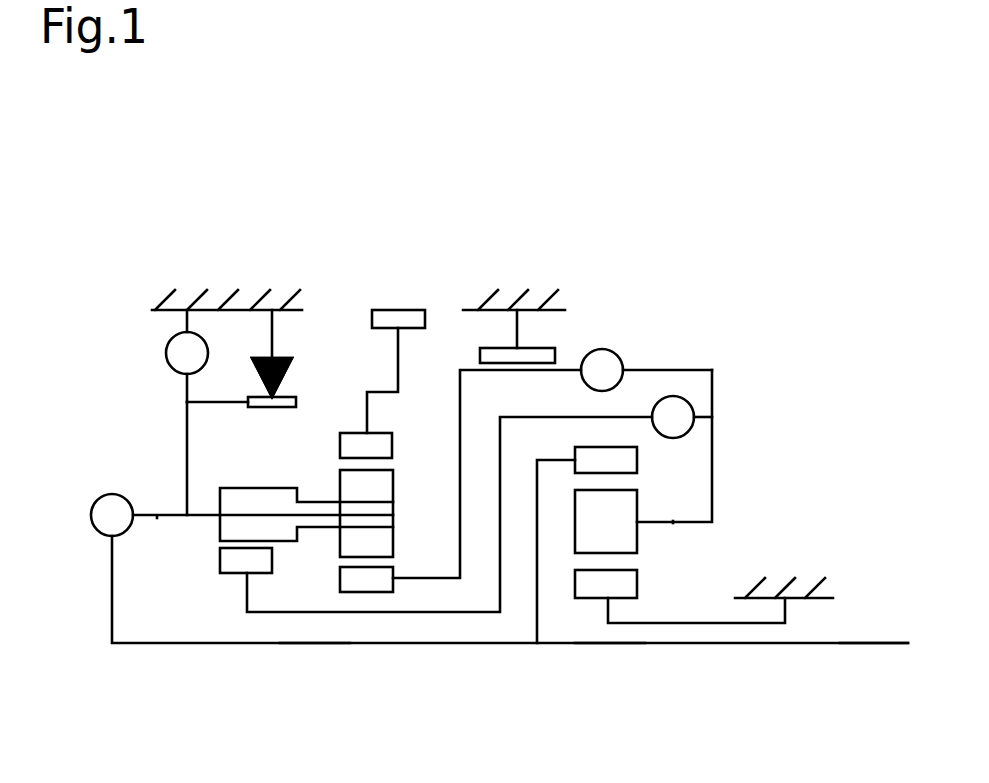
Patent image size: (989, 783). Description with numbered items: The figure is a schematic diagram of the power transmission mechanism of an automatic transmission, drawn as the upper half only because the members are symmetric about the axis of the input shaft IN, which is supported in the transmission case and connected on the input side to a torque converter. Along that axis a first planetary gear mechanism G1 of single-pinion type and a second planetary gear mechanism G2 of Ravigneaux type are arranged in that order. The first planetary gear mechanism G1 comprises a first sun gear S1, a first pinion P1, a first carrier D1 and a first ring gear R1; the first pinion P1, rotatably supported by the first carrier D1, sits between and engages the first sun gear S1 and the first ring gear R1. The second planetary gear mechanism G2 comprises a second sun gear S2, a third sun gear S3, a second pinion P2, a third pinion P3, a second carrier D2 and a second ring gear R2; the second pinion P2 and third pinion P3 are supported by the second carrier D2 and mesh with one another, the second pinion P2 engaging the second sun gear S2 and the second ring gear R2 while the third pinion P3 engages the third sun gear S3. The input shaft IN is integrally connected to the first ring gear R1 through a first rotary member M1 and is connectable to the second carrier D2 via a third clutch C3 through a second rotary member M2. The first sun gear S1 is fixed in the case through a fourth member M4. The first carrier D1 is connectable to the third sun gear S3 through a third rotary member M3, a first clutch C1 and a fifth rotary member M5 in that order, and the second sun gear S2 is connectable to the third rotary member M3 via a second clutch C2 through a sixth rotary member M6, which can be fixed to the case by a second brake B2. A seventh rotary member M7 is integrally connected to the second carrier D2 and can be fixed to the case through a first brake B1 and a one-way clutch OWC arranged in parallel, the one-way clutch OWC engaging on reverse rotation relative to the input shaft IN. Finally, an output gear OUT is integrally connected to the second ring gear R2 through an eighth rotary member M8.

The first brake B1 is at (187, 356).
The one-way clutch OWC is at (257, 358).
The seventh rotary member M7 is at (172, 458).
The third clutch C3 is at (242, 515).
The second rotary member M2 is at (496, 589).
The second carrier D2 is at (157, 518).
The third pinion P3 is at (306, 501).
The second pinion P2 is at (366, 513).
The third sun gear S3 is at (246, 561).
The fifth rotary member M5 is at (449, 514).
The second sun gear S2 is at (366, 580).
The sixth rotary member M6 is at (487, 474).
The second ring gear R2 is at (366, 446).
The eighth rotary member M8 is at (382, 380).
The output gear OUT is at (398, 304).
The second brake B2 is at (517, 336).
The second clutch C2 is at (646, 370).
The first clutch C1 is at (682, 417).
The third rotary member M3 is at (690, 446).
The first ring gear R1 is at (606, 460).
The first rotary member M1 is at (556, 551).
The first pinion P1 is at (606, 521).
The first carrier D1 is at (673, 523).
The first sun gear S1 is at (606, 584).
The fourth member M4 is at (696, 609).
The input shaft IN is at (874, 627).
The second planetary gear mechanism G2 is at (313, 645).
The first planetary gear mechanism G1 is at (610, 645).